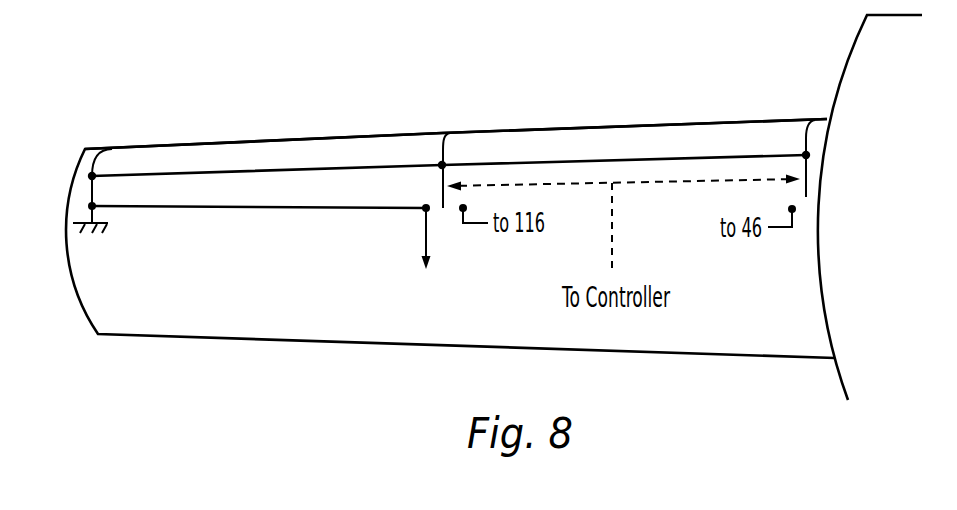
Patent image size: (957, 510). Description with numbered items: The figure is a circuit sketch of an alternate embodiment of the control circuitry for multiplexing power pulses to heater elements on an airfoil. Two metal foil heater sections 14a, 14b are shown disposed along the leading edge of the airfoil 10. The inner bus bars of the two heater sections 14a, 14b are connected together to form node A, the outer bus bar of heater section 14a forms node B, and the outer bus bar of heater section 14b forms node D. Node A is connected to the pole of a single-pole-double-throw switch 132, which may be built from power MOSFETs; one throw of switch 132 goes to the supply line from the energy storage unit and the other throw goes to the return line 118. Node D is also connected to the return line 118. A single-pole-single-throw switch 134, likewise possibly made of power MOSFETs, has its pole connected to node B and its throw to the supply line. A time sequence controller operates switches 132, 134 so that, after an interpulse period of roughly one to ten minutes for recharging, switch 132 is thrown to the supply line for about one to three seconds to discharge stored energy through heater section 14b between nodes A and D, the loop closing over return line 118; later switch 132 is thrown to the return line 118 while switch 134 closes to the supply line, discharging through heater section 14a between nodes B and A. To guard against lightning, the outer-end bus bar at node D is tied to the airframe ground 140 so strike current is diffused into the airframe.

The airfoil 10 is at (262, 328).
The heater section 14a is at (625, 128).
The heater section 14b is at (280, 141).
The return line 118 is at (273, 212).
The single-pole-double-throw switch 132 is at (438, 193).
The single-pole-single-throw switch 134 is at (807, 190).
The airframe ground 140 is at (92, 242).
The node A is at (442, 165).
The node B is at (806, 155).
The node D is at (93, 177).